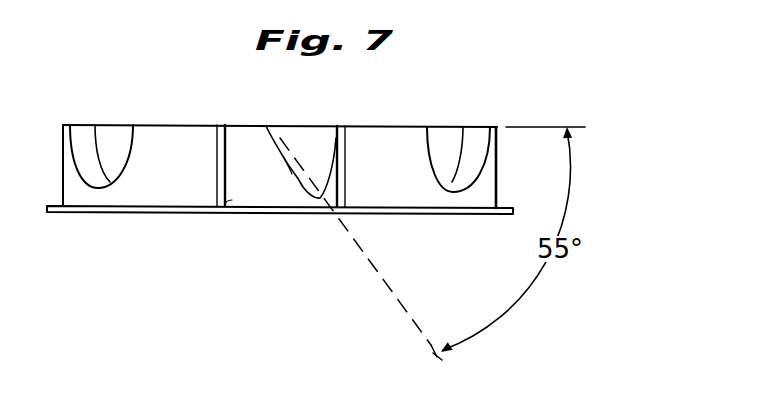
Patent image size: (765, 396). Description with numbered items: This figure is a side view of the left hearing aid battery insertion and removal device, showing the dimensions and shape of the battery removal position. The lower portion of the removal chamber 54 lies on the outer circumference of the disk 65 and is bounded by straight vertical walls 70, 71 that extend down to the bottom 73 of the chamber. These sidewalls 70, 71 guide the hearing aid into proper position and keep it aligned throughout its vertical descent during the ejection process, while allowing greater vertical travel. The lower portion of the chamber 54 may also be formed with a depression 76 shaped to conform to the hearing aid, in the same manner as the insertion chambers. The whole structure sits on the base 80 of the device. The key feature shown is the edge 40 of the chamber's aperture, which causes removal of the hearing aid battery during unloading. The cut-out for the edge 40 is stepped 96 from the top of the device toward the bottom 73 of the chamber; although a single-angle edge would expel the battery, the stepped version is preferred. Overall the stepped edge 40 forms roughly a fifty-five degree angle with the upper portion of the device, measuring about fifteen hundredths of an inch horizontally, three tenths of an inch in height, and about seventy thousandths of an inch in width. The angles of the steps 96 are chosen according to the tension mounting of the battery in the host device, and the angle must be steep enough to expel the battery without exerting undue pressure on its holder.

The edge 40 is at (305, 152).
The removal chamber 54 is at (262, 227).
The disk 65 is at (187, 168).
The vertical wall 70 is at (226, 158).
The vertical wall 71 is at (347, 206).
The bottom of the chamber 73 is at (250, 205).
The depression 76 is at (258, 172).
The base 80 is at (105, 222).
The steps 96 is at (288, 167).